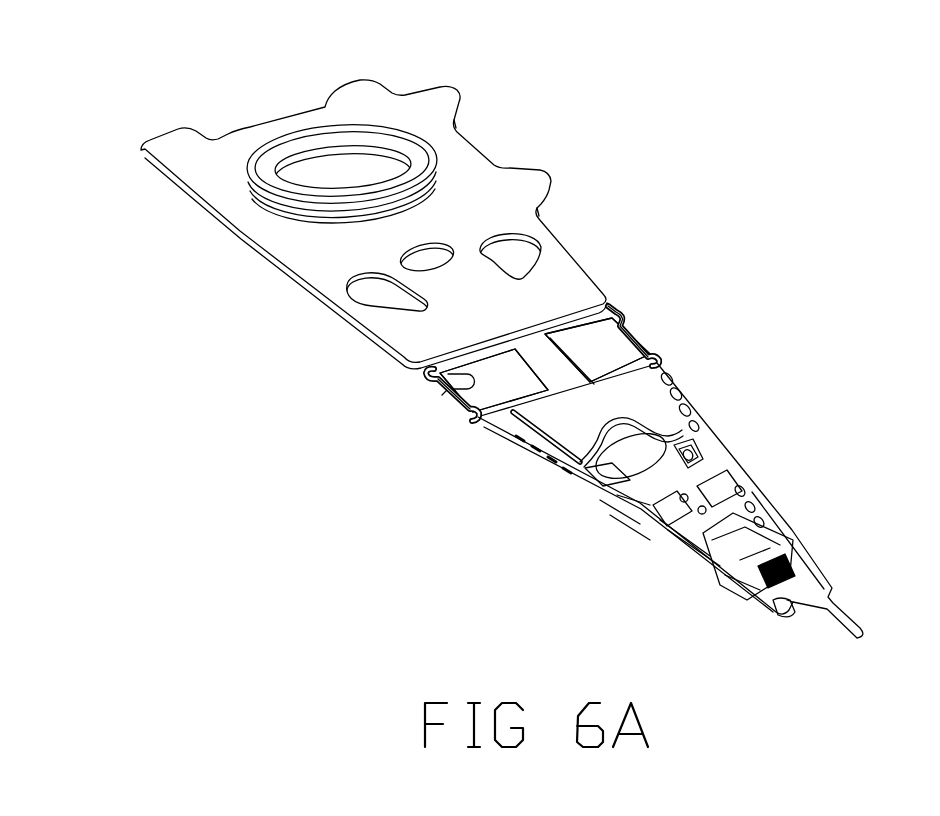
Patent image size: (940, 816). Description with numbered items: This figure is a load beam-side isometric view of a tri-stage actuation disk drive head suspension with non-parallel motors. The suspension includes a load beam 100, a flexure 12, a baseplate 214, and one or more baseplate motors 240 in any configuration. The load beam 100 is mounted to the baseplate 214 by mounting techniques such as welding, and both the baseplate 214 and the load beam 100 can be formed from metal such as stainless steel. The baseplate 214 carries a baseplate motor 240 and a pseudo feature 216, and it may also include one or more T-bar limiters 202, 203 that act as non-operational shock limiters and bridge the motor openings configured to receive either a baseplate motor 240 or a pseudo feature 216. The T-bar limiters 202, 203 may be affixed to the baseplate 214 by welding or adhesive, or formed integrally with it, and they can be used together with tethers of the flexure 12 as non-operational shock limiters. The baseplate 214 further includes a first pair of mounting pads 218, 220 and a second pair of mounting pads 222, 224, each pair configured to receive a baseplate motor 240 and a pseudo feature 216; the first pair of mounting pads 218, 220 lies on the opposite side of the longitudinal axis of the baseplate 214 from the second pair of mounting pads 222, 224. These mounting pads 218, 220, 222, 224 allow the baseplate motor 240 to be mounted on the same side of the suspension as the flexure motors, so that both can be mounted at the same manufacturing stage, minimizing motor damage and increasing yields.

The flexure 12 is at (656, 596).
The load beam 100 is at (587, 493).
The T-bar limiter 202 is at (652, 348).
The T-bar limiter 203 is at (436, 373).
The baseplate 214 is at (268, 117).
The pseudo feature 216 is at (415, 416).
The mounting pad 218 is at (585, 318).
The mounting pad 220 is at (650, 362).
The mounting pad 222 is at (480, 354).
The mounting pad 224 is at (516, 414).
The baseplate motor 240 is at (672, 311).